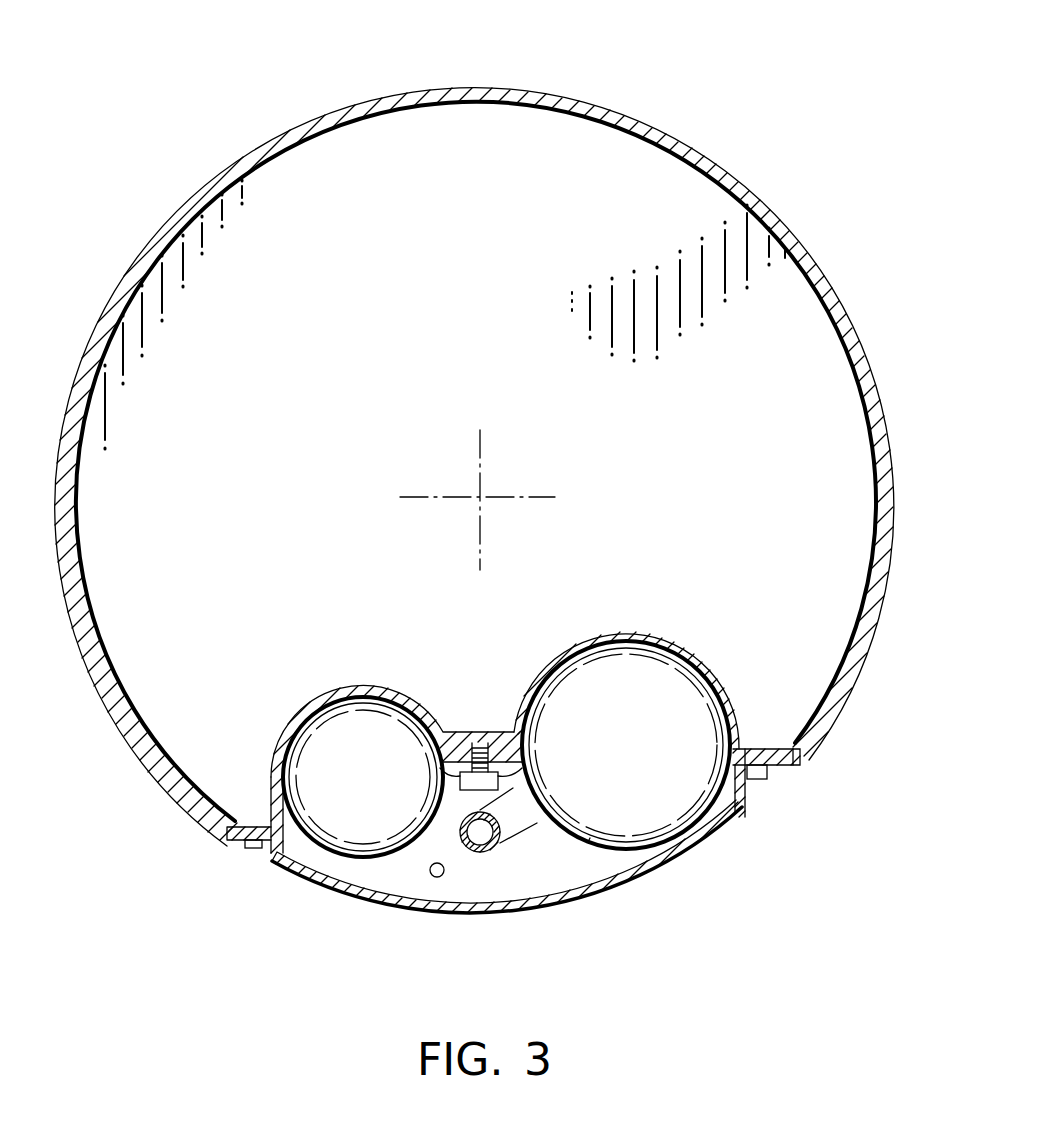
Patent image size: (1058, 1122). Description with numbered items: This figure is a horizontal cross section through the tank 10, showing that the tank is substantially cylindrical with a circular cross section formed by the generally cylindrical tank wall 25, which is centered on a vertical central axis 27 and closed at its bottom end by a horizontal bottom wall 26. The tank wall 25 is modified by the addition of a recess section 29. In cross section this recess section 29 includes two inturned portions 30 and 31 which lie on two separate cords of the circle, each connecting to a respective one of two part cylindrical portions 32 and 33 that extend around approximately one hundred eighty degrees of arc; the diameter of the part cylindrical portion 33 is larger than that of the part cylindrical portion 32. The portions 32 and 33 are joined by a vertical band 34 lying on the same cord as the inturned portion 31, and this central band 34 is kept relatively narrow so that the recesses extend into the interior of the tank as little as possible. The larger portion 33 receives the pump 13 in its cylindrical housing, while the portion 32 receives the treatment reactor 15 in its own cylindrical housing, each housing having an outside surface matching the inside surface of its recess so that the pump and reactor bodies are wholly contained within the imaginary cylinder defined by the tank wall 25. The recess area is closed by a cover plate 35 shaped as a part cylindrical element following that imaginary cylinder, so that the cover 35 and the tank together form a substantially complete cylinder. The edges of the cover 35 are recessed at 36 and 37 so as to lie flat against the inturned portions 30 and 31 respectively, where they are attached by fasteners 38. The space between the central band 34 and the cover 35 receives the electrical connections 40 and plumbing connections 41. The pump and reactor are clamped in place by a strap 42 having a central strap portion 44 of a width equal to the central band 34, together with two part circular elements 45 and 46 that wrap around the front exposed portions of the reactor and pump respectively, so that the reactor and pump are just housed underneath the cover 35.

The tank 10 is at (750, 140).
The pump 13 is at (652, 750).
The treatment reactor 15 is at (378, 764).
The tank wall 25 is at (280, 132).
The bottom wall 26 is at (233, 246).
The vertical central axis 27 is at (483, 493).
The recess section 29 is at (485, 669).
The inturned portion 30 is at (248, 812).
The inturned portion 31 is at (760, 748).
The part cylindrical portion 32 is at (312, 720).
The part cylindrical portion 33 is at (605, 648).
The vertical band 34 is at (460, 732).
The cover plate 35 is at (510, 911).
The recessed edge 36 is at (242, 844).
The recessed edge 37 is at (777, 759).
The fasteners 38 is at (760, 792).
The electrical connections 40 is at (437, 877).
The plumbing connections 41 is at (478, 852).
The strap 42 is at (578, 856).
The central strap portion 44 is at (457, 788).
The part circular element 45 is at (387, 847).
The part circular element 46 is at (588, 840).